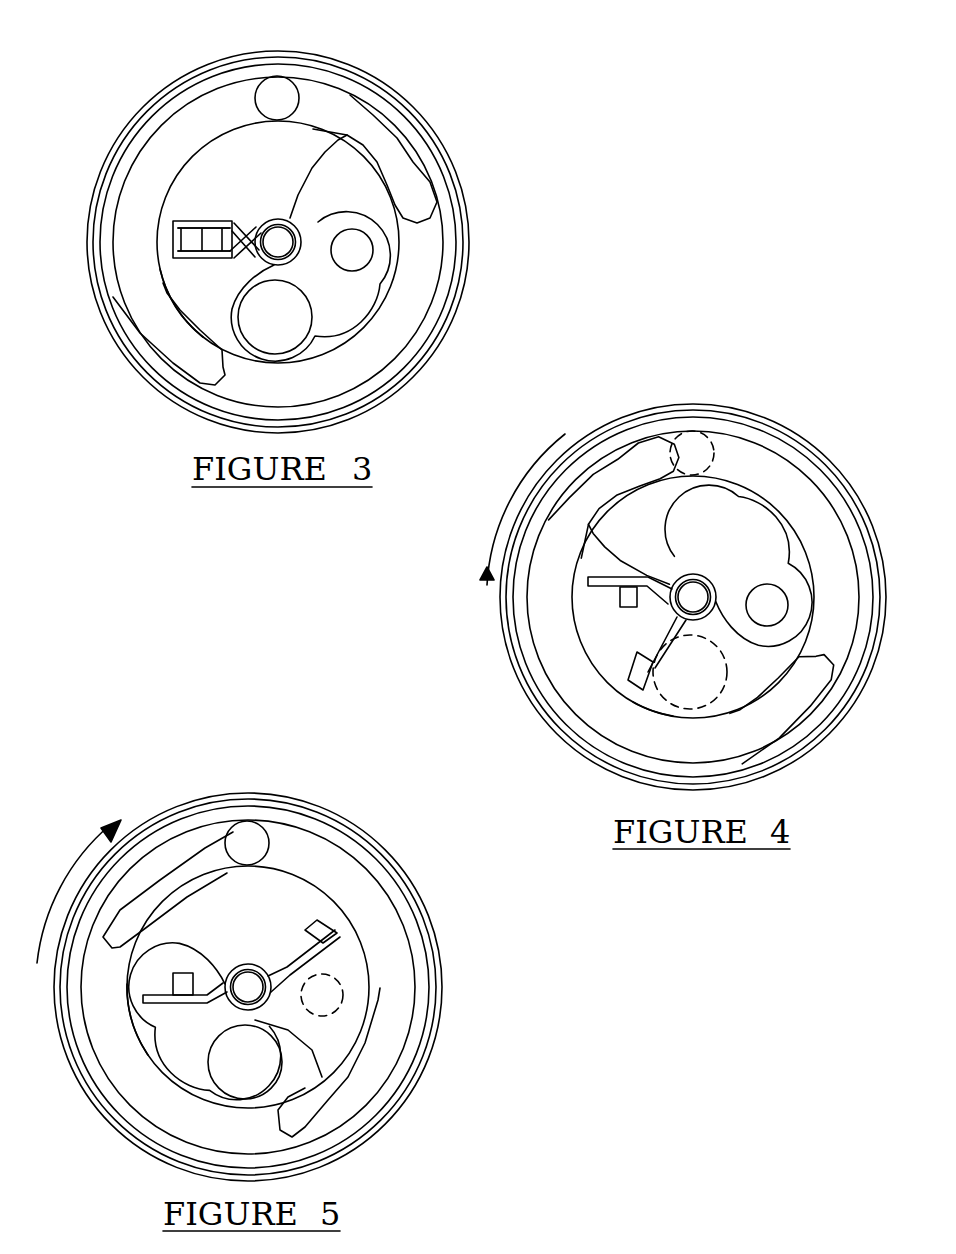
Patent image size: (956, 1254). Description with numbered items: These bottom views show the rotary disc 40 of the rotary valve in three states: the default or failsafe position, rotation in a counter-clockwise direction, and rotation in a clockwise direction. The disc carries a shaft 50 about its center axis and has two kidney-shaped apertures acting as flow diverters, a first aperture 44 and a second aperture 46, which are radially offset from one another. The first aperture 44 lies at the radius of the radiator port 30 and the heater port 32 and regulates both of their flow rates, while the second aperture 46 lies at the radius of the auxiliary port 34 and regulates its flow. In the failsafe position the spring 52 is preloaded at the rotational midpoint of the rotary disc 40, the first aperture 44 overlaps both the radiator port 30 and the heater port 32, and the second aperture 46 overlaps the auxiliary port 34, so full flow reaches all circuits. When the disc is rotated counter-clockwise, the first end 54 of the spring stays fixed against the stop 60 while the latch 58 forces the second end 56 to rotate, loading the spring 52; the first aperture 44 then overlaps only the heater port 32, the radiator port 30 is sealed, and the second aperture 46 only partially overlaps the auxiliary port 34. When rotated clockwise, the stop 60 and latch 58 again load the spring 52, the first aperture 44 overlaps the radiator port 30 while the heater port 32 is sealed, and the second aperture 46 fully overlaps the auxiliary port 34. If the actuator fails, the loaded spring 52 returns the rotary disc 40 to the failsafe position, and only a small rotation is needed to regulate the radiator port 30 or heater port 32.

In FIG. 3, the radiator port 30 is at (319, 364).
In FIG. 4, the radiator port 30 is at (728, 723).
In FIG. 5, the radiator port 30 is at (207, 1116).
In FIG. 3, the heater port 32 is at (422, 250).
In FIG. 4, the heater port 32 is at (840, 604).
In FIG. 5, the heater port 32 is at (395, 995).
In FIG. 3, the auxiliary port 34 is at (320, 72).
In FIG. 4, the auxiliary port 34 is at (737, 425).
In FIG. 5, the auxiliary port 34 is at (294, 816).
In FIG. 3, the rotary disc 40 is at (267, 247).
In FIG. 4, the rotary disc 40 is at (684, 603).
In FIG. 5, the rotary disc 40 is at (241, 993).
In FIG. 3, the first aperture 44 is at (326, 242).
In FIG. 4, the first aperture 44 is at (748, 597).
In FIG. 5, the first aperture 44 is at (212, 997).
In FIG. 3, the second aperture 46 is at (278, 216).
In FIG. 4, the second aperture 46 is at (693, 573).
In FIG. 5, the second aperture 46 is at (248, 960).
In FIG. 3, the shaft 50 is at (383, 197).
In FIG. 4, the shaft 50 is at (801, 554).
In FIG. 5, the shaft 50 is at (364, 1022).
In FIG. 3, the spring 52 is at (275, 220).
In FIG. 4, the spring 52 is at (691, 588).
In FIG. 5, the spring 52 is at (273, 991).
In FIG. 3, the first end 54 is at (162, 197).
In FIG. 4, the first end 54 is at (566, 548).
In FIG. 5, the first end 54 is at (310, 951).
In FIG. 3, the second end 56 is at (126, 303).
In FIG. 4, the second end 56 is at (625, 767).
In FIG. 5, the second end 56 is at (94, 1034).
In FIG. 3, the latch 58 is at (140, 217).
In FIG. 4, the latch 58 is at (582, 663).
In FIG. 5, the latch 58 is at (105, 998).
In FIG. 3, the stop 60 is at (140, 265).
In FIG. 4, the stop 60 is at (551, 615).
In FIG. 5, the stop 60 is at (359, 906).